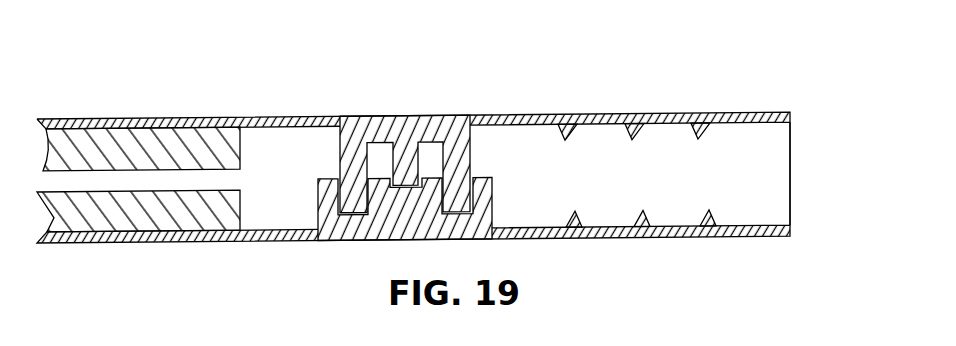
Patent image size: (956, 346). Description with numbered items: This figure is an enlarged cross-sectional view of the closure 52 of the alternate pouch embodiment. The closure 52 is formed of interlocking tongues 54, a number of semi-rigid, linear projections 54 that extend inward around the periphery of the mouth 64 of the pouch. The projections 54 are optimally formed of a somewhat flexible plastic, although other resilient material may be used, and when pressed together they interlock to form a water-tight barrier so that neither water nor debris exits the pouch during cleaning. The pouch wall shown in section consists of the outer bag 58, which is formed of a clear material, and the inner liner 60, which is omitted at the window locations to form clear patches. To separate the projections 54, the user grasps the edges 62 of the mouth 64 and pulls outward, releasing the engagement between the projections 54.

The closure 52 is at (407, 82).
The interlocking tongues 54 is at (340, 152).
The outer bag 58 is at (145, 119).
The inner liner 60 is at (133, 218).
The edges 62 is at (745, 113).
The mouth 64 is at (775, 175).